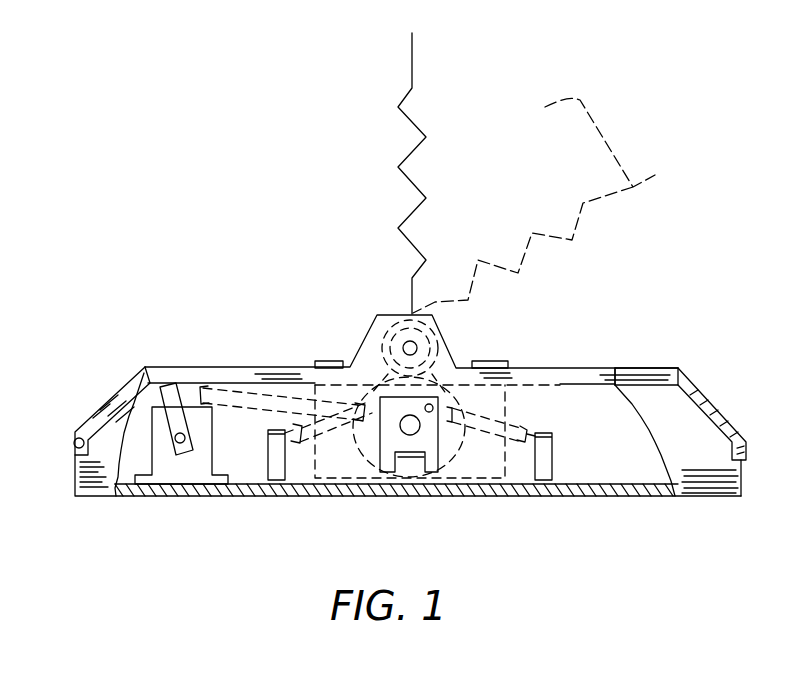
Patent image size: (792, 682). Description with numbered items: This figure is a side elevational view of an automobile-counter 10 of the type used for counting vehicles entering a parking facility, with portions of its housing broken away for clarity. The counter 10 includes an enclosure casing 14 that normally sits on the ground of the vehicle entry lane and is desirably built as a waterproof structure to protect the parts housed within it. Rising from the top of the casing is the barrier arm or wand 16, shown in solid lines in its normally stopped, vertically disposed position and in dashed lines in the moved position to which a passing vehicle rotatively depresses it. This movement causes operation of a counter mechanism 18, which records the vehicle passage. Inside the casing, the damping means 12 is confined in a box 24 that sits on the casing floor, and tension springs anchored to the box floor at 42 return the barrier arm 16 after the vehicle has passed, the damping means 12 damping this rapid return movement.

The automobile-counter 10 is at (586, 360).
The damping means 12 is at (512, 408).
The enclosure casing 14 is at (235, 388).
The barrier arm or wand 16 is at (412, 82).
The counter mechanism 18 is at (158, 422).
The box 24 is at (318, 437).
The anchor point of tension springs 42 is at (542, 431).